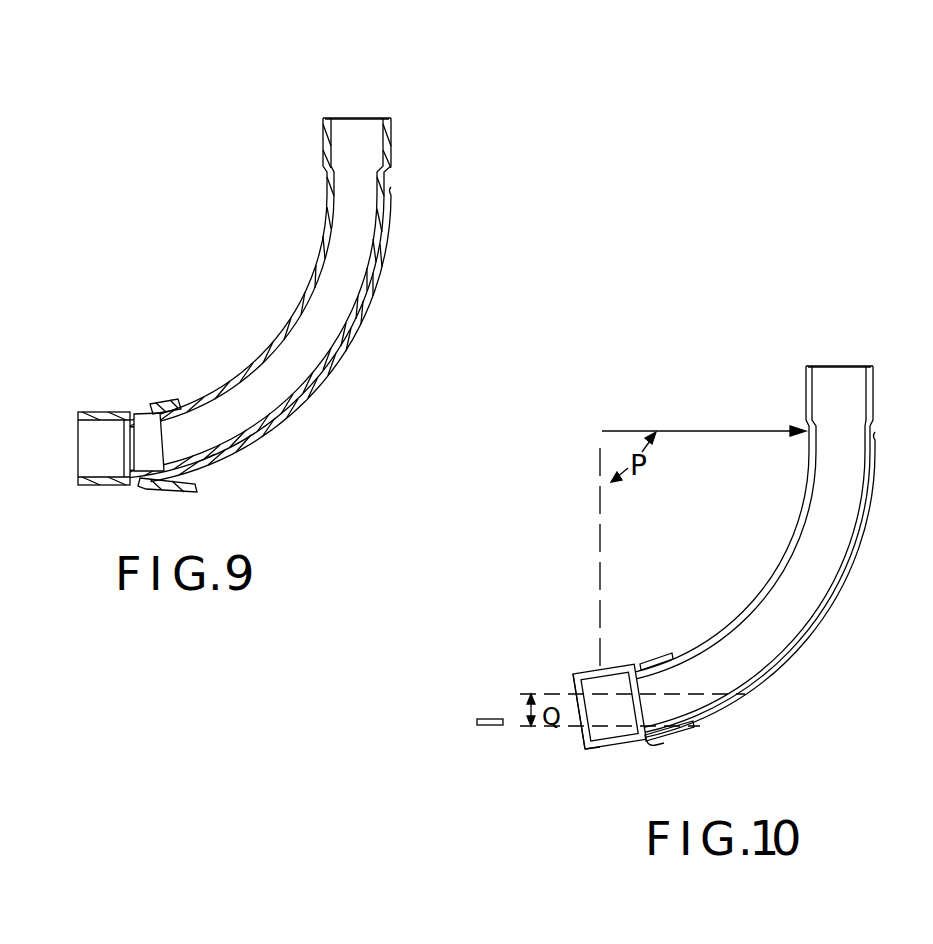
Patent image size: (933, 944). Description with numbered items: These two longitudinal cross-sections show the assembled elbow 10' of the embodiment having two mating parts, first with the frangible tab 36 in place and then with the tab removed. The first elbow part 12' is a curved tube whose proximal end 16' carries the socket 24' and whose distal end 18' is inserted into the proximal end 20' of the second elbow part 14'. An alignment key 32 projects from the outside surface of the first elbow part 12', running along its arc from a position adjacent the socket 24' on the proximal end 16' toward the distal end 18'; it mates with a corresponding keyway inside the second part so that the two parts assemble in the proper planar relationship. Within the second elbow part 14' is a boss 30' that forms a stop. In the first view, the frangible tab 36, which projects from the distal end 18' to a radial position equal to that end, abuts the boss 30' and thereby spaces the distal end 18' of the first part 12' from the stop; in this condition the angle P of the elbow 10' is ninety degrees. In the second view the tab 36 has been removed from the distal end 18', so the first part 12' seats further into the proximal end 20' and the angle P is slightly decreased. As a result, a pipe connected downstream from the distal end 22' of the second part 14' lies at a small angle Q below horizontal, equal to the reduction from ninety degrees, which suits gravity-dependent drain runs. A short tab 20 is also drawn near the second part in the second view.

In FIG. 9, the elbow 10' is at (275, 280).
In FIG. 9, the first elbow part 12' is at (241, 337).
In FIG. 10, the first elbow part 12' is at (726, 595).
In FIG. 9, the second elbow part 14' is at (179, 513).
In FIG. 10, the second elbow part 14' is at (555, 675).
In FIG. 9, the proximal end 16' is at (387, 137).
In FIG. 10, the proximal end 16' is at (862, 370).
In FIG. 9, the distal end 18' is at (231, 480).
In FIG. 10, the distal end 18' is at (669, 630).
In FIG. 9, the proximal end 20' is at (172, 375).
In FIG. 10, the tab 20 is at (684, 760).
In FIG. 10, the distal end 22' is at (604, 775).
In FIG. 9, the socket 24' is at (376, 101).
In FIG. 10, the socket 24' is at (842, 330).
In FIG. 9, the boss 30' is at (105, 420).
In FIG. 10, the boss 30' is at (618, 590).
In FIG. 9, the alignment key 32 is at (394, 213).
In FIG. 10, the alignment key 32 is at (754, 586).
In FIG. 9, the frangible tab 36 is at (150, 462).
In FIG. 10, the frangible tab 36 is at (485, 718).